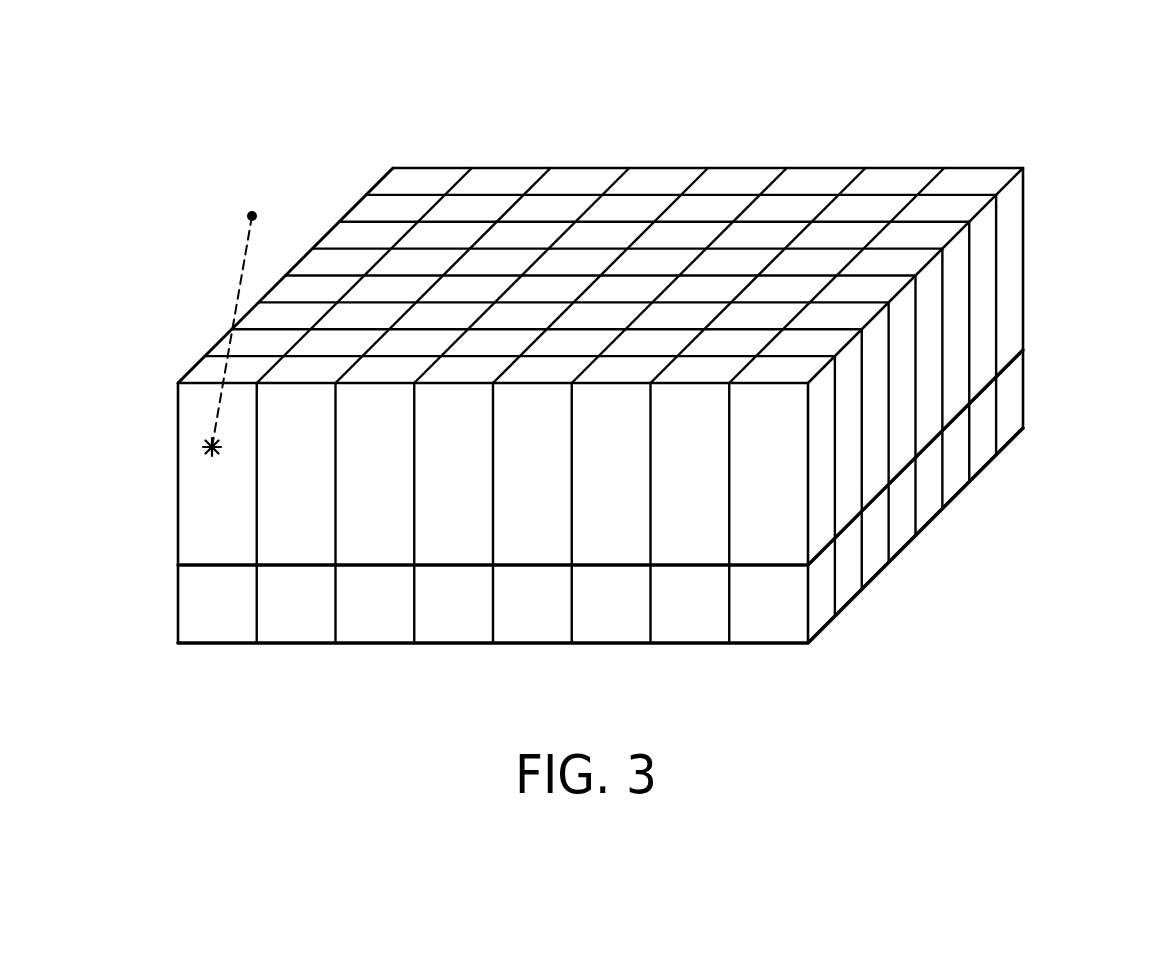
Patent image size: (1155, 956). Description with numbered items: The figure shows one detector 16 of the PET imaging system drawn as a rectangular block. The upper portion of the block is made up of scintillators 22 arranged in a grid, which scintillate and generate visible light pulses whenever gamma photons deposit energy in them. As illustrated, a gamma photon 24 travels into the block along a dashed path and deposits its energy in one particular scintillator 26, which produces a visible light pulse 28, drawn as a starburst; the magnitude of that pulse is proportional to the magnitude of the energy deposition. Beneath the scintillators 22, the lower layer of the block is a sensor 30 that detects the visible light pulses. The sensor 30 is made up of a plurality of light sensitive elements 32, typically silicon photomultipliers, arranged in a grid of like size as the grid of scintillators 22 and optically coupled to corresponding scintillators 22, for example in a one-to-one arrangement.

The detector 16 is at (619, 411).
The scintillators 22 is at (424, 179).
The gamma photon 24 is at (247, 215).
The scintillator 26 is at (205, 371).
The visible light pulse 28 is at (206, 445).
The sensor 30 is at (651, 535).
The light sensitive elements 32 is at (696, 630).